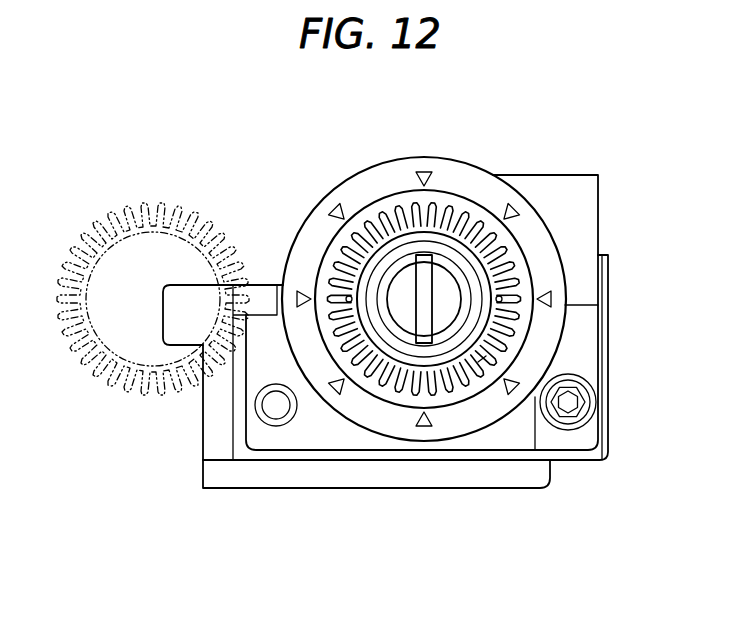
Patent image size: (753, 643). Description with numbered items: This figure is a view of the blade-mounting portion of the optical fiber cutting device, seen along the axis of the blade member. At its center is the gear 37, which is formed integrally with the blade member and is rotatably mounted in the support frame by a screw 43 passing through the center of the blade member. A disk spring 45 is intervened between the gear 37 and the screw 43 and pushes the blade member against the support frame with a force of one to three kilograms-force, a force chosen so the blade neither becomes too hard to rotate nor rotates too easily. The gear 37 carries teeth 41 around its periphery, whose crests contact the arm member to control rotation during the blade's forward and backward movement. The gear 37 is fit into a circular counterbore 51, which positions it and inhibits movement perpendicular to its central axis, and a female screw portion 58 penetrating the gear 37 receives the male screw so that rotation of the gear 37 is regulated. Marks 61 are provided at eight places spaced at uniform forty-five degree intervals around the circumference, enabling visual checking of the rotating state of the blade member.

The gear 37 is at (203, 205).
The teeth 41 is at (508, 237).
The screw 43 is at (402, 294).
The disk spring 45 is at (402, 253).
The circular counterbore 51 is at (480, 360).
The female screw portion 58 is at (499, 305).
The marks 61 is at (424, 170).